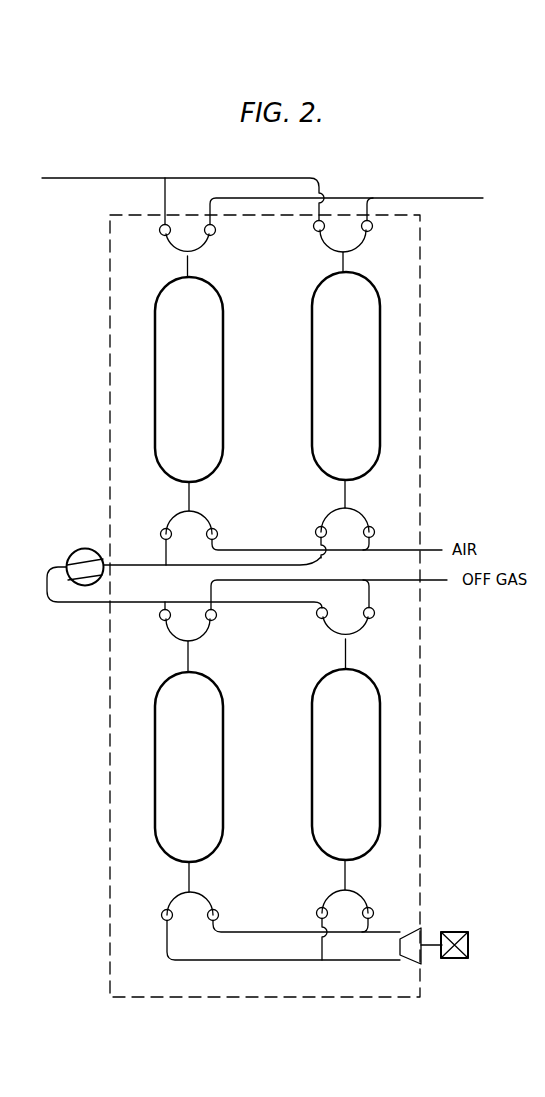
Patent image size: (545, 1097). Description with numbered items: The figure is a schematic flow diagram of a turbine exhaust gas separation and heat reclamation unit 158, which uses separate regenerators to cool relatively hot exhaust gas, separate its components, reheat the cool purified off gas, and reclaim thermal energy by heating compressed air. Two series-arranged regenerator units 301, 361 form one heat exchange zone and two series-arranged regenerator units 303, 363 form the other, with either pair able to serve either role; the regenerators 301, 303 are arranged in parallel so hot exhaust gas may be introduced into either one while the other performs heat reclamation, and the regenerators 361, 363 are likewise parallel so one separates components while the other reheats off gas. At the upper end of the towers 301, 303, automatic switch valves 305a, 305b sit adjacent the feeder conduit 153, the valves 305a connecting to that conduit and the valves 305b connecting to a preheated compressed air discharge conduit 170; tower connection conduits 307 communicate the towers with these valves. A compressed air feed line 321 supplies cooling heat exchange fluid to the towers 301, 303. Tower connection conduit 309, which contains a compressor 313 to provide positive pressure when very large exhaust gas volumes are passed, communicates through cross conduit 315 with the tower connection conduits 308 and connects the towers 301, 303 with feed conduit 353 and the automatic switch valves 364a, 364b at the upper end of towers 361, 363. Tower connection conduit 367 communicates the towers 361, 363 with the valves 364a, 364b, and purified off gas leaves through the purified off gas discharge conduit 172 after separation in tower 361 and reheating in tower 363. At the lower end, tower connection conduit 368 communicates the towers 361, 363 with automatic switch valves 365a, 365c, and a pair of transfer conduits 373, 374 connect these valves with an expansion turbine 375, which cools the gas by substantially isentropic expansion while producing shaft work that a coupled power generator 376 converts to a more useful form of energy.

The feeder conduit 153 is at (78, 178).
The preheated compressed air discharge conduit 170 is at (428, 198).
The automatic switch valves 305a is at (161, 238).
The automatic switch valves 305b is at (207, 224).
The tower connection conduits 307 is at (344, 272).
The regenerator unit 301 is at (201, 386).
The regenerator unit 303 is at (357, 383).
The gas separation and heat reclamation unit 158 is at (420, 395).
The tower connection conduits 308 is at (187, 499).
The compressed air feed line 321 is at (398, 548).
The compressor 313 is at (90, 548).
The tower connection conduit 309 is at (118, 566).
The cross conduit 315 is at (318, 561).
The purified off gas discharge conduit 172 is at (432, 581).
The feed conduit 353 is at (280, 600).
The automatic switch valves 364a is at (161, 624).
The automatic switch valves 364b is at (215, 624).
The tower connection conduit 367 is at (345, 664).
The regenerator unit 361 is at (201, 771).
The regenerator unit 363 is at (357, 768).
The tower connection conduit 368 is at (340, 871).
The automatic switch valves 365a is at (163, 910).
The automatic switch valves 365c is at (218, 910).
The transfer conduit 373 is at (277, 963).
The transfer conduit 374 is at (277, 935).
The expansion turbine 375 is at (412, 965).
The power generator 376 is at (460, 932).